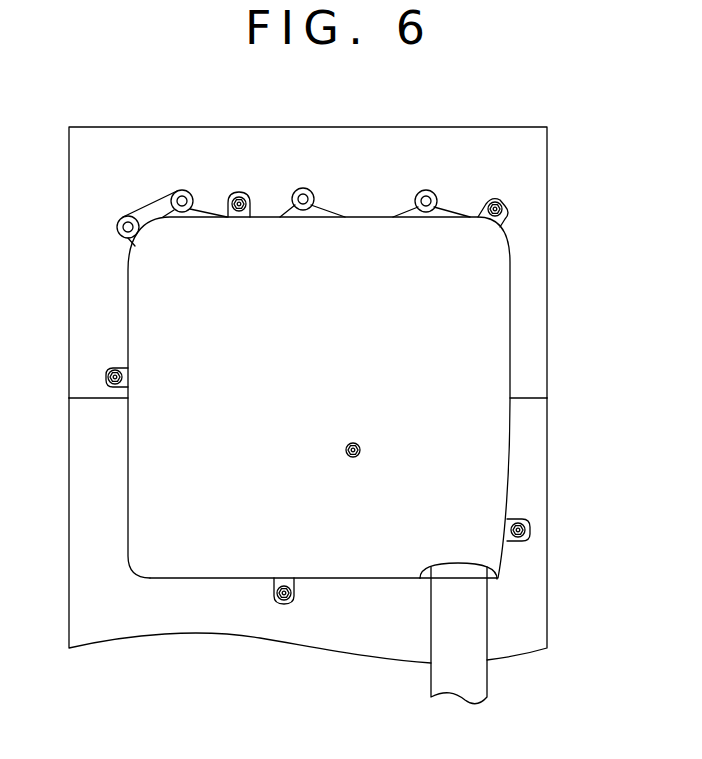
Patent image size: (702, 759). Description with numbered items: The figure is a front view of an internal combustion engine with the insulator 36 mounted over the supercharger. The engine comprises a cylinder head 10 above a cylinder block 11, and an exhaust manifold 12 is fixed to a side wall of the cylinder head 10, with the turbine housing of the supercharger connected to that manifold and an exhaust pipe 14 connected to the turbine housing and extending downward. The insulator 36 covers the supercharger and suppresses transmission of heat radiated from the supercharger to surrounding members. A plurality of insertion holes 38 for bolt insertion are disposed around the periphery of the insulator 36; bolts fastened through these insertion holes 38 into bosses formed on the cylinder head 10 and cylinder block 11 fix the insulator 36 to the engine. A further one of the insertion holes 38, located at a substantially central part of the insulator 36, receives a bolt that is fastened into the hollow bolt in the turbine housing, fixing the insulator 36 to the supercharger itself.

The cylinder head 10 is at (537, 253).
The cylinder block 11 is at (537, 493).
The exhaust manifold 12 is at (173, 216).
The exhaust pipe 14 is at (477, 612).
The insulator 36 is at (367, 227).
The insertion holes 38 is at (239, 190).